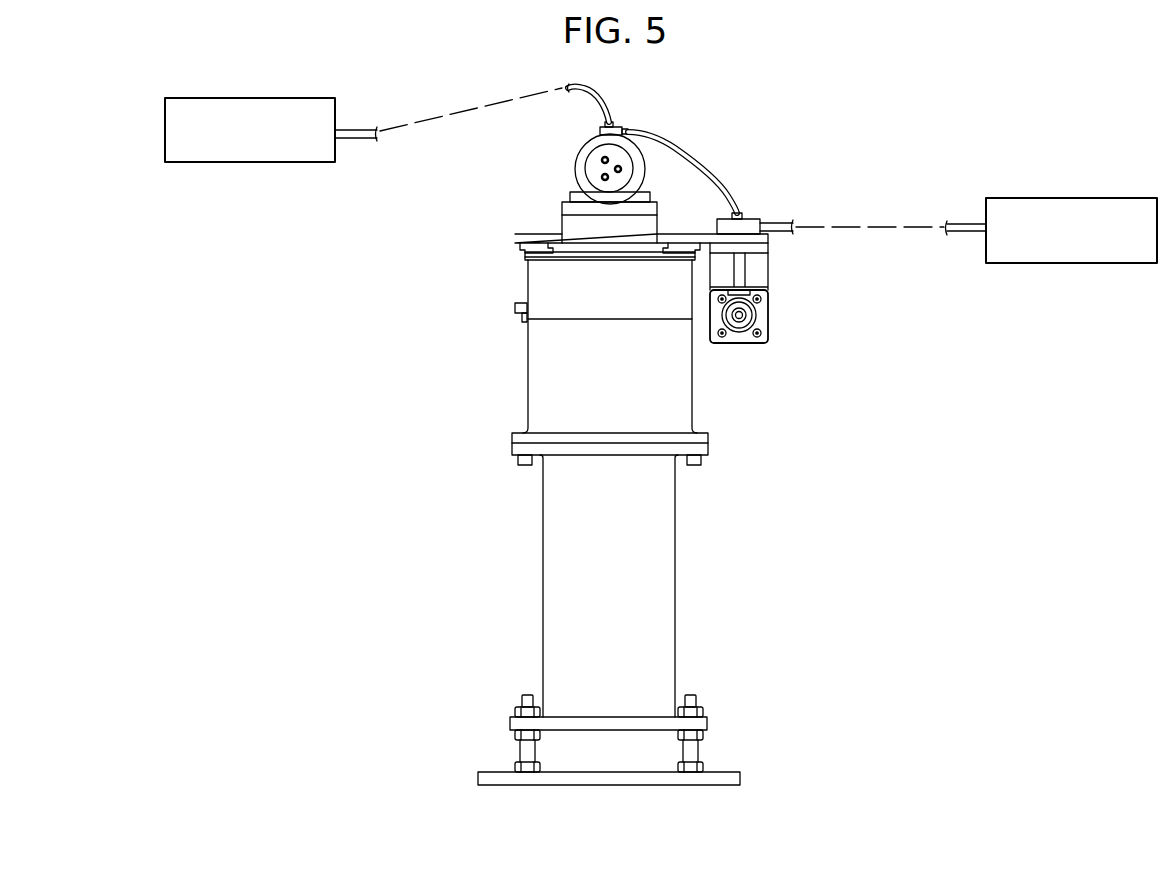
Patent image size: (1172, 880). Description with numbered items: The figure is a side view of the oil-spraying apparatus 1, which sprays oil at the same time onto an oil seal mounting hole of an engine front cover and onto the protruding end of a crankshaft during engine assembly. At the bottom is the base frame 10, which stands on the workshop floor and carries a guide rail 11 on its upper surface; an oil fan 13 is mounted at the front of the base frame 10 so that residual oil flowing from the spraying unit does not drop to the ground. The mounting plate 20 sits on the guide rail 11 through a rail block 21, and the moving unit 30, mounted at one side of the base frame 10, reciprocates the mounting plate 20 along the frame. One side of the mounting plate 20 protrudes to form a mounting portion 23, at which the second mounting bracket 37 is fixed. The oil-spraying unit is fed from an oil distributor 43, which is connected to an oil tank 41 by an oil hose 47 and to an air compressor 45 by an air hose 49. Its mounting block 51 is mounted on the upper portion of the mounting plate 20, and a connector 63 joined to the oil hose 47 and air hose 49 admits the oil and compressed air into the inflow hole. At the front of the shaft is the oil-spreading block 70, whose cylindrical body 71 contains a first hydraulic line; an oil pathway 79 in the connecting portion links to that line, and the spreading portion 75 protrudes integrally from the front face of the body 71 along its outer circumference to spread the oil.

The oil-spraying apparatus 1 is at (858, 108).
The base frame 10 is at (530, 392).
The guide rail 11 is at (678, 250).
The oil fan 13 is at (515, 318).
The mounting plate 20 is at (515, 240).
The rail block 21 is at (525, 250).
The mounting portion 23 is at (767, 240).
The moving unit 30 is at (788, 290).
The second mounting bracket 37 is at (767, 271).
The oil tank 41 is at (1113, 198).
The oil distributor 43 is at (750, 220).
The air compressor 45 is at (250, 162).
The oil hose 47 is at (708, 169).
The air hose 49 is at (568, 90).
The mounting block 51 is at (570, 223).
The connector 63 is at (600, 131).
The oil-spreading block 70 is at (619, 146).
The body 71 is at (622, 152).
The spreading portion 75 is at (645, 178).
The oil pathway 79 is at (591, 170).